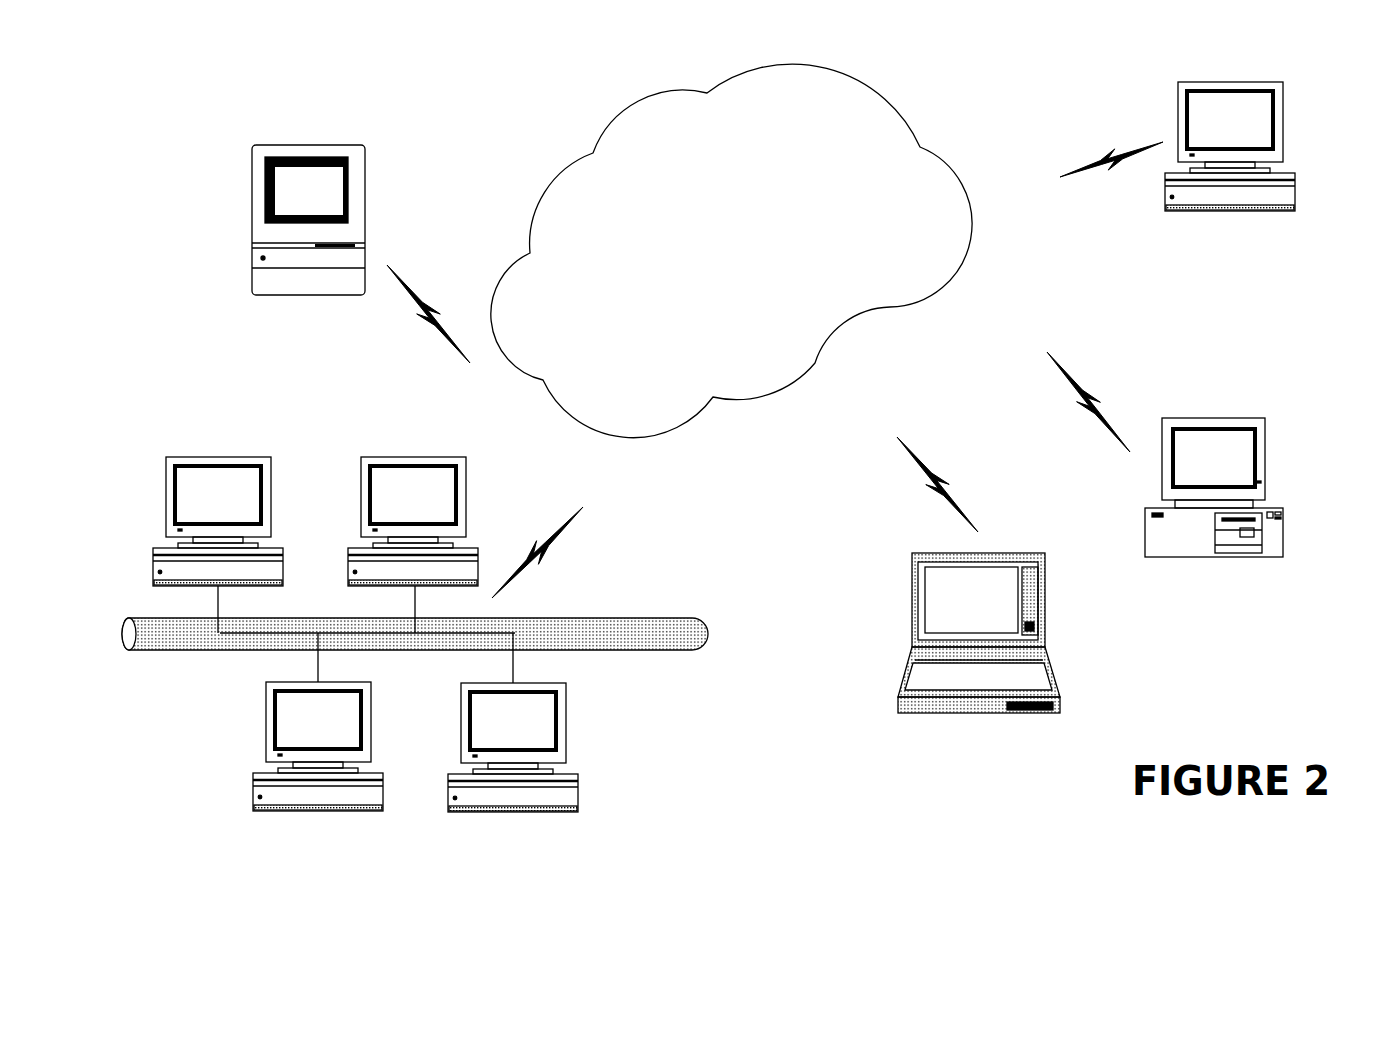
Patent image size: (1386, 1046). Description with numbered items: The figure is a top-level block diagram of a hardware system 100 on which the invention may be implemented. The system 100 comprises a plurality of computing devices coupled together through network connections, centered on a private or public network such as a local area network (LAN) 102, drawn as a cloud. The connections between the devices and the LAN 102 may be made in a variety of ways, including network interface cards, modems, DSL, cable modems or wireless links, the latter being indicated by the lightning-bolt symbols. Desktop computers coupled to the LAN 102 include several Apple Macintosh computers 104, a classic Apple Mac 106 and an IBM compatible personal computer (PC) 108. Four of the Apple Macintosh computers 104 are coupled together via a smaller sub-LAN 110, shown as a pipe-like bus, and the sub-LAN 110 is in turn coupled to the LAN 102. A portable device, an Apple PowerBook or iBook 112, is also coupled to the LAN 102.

The system 100 is at (538, 118).
The local area network (LAN) 102 is at (734, 265).
The Apple Macintosh 104 is at (1283, 123).
The classic Apple Mac 106 is at (247, 240).
The IBM compatible personal computer (PC) 108 is at (1265, 465).
The sub-LAN 110 is at (582, 604).
The Apple PowerBook or iBook 112 is at (912, 620).